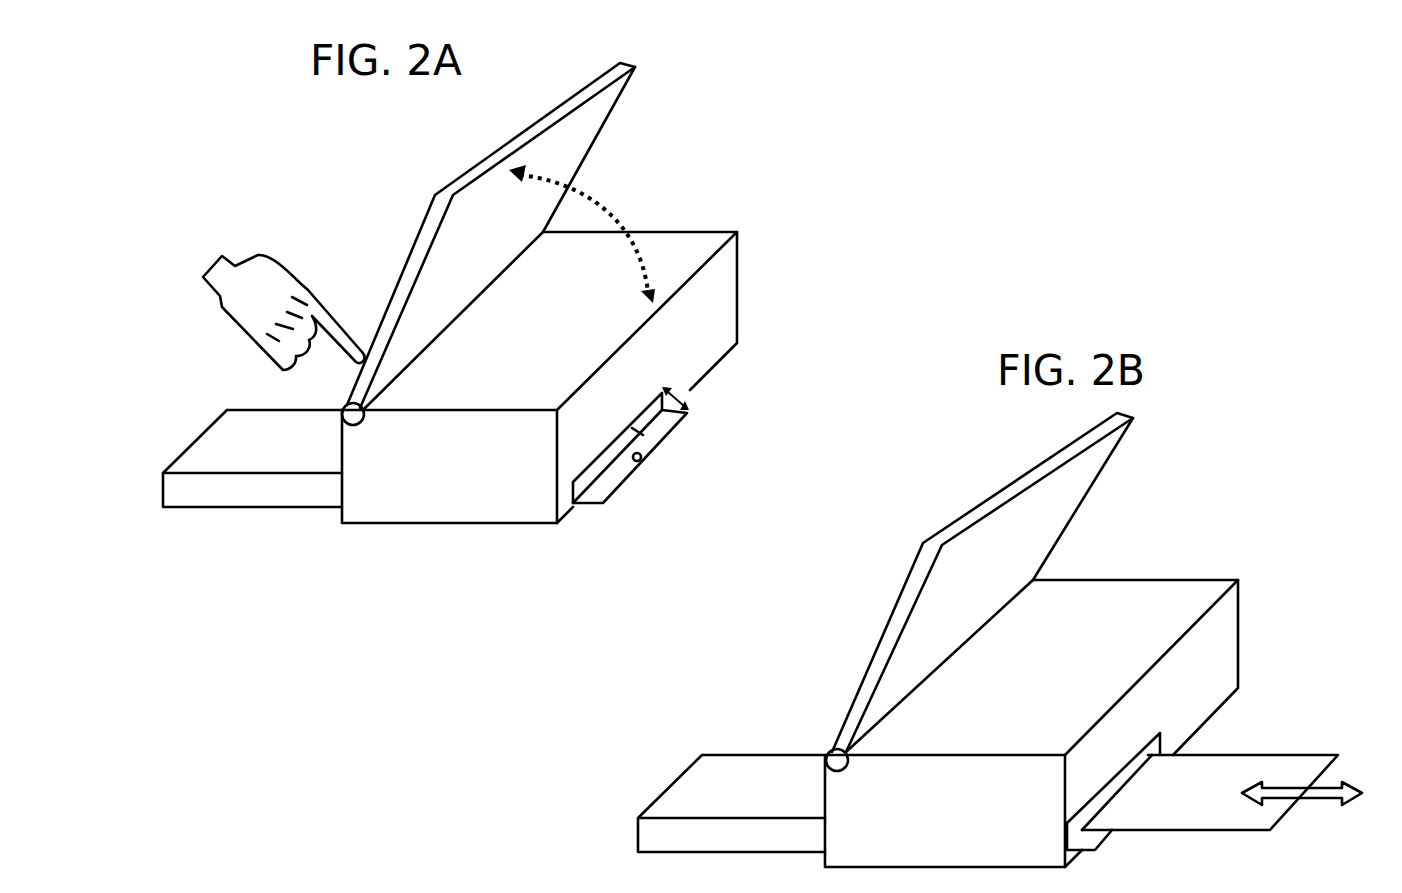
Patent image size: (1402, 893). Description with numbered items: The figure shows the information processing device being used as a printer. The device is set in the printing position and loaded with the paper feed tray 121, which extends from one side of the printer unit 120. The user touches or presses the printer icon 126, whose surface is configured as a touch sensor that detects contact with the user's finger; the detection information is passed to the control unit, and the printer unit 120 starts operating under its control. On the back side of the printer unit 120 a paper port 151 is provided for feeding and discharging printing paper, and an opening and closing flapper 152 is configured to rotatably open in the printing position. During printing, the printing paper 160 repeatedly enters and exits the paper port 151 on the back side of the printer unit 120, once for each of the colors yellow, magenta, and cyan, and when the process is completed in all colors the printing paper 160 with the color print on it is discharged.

In FIG. 2A, the printer unit 120 is at (675, 242).
In FIG. 2A, the paper feed tray 121 is at (230, 488).
In FIG. 2B, the paper feed tray 121 is at (738, 770).
In FIG. 2A, the printer icon 126 is at (360, 352).
In FIG. 2A, the paper port 151 is at (675, 440).
In FIG. 2A, the opening and closing flapper 152 is at (683, 420).
In FIG. 2B, the printing paper 160 is at (1305, 757).